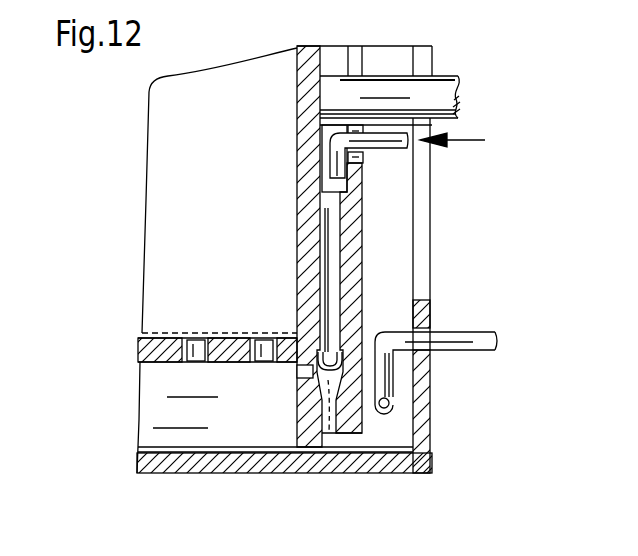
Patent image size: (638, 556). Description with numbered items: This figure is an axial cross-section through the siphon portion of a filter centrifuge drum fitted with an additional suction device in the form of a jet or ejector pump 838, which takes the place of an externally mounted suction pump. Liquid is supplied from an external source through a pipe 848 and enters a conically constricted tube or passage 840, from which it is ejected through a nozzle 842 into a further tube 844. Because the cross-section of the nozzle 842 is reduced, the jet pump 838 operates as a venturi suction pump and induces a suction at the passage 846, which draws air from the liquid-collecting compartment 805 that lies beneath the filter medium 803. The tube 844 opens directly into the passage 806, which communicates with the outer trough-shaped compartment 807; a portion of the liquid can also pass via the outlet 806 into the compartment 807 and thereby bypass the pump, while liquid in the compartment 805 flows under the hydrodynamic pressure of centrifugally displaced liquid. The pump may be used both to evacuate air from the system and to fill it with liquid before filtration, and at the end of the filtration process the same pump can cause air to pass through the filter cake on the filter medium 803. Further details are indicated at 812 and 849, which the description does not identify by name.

The filter medium 803 is at (143, 320).
The liquid-collecting compartment 805 is at (182, 440).
The passage 806 is at (342, 437).
The outer trough-shaped compartment 807 is at (403, 440).
The slot 812 is at (297, 371).
The jet pump 838 is at (290, 421).
The conically constricted tube 840 is at (332, 287).
The nozzle 842 is at (367, 330).
The further tube 844 is at (325, 437).
The passage 846 is at (305, 358).
The pipe 848 is at (400, 148).
The connection block 849 is at (333, 190).